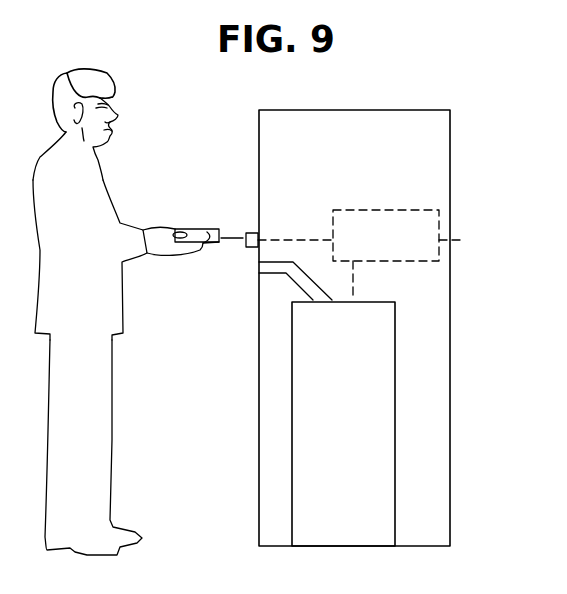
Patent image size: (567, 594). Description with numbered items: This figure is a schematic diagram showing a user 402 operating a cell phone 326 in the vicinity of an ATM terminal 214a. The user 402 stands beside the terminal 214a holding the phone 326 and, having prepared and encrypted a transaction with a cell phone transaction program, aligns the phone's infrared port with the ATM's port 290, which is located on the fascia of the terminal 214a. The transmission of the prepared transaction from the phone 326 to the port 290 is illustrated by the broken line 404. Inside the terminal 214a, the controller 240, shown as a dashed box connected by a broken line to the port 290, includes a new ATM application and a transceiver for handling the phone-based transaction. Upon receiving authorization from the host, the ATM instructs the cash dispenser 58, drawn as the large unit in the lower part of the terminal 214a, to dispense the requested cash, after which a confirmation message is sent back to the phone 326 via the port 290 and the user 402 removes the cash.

The user 402 is at (91, 72).
The cell phone 326 is at (197, 229).
The broken line 404 is at (238, 241).
The port 290 is at (253, 232).
The kiosk housing 214a is at (450, 157).
The controller 240 is at (402, 247).
The cash dispenser 58 is at (395, 365).